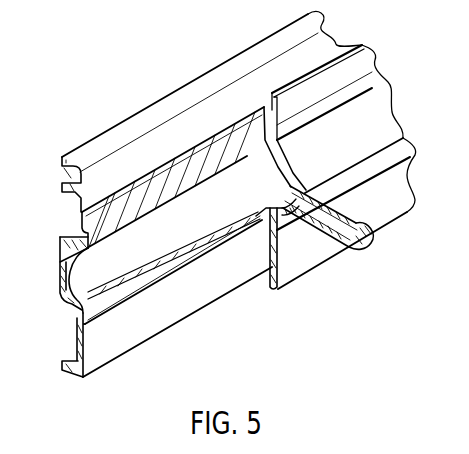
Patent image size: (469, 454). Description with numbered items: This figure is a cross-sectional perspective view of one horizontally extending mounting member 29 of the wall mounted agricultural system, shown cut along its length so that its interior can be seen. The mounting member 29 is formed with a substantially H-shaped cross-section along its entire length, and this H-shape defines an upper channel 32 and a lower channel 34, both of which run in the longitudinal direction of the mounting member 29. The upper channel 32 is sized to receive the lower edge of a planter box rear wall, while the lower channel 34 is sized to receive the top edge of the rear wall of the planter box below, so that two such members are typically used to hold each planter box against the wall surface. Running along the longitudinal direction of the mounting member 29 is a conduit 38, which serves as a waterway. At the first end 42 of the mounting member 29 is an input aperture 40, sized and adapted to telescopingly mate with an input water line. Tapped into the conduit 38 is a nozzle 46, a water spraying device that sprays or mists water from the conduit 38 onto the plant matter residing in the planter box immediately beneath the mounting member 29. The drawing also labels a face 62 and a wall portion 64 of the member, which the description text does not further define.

The mounting member 29 is at (118, 113).
The upper channel 32 is at (262, 100).
The lower channel 34 is at (262, 257).
The conduit 38 is at (110, 276).
The input aperture 40 is at (72, 292).
The first end 42 is at (59, 246).
The nozzle 46 is at (358, 226).
The side face 62 is at (295, 260).
The outer wall 64 is at (60, 278).